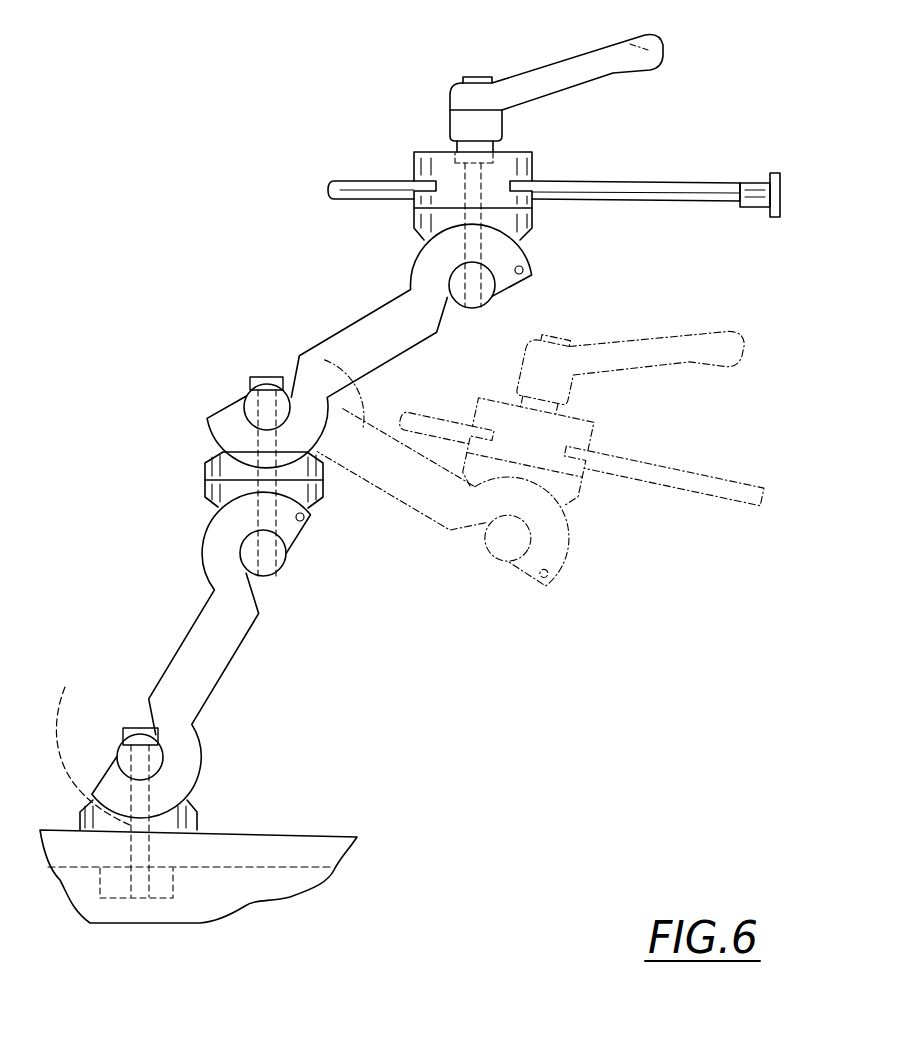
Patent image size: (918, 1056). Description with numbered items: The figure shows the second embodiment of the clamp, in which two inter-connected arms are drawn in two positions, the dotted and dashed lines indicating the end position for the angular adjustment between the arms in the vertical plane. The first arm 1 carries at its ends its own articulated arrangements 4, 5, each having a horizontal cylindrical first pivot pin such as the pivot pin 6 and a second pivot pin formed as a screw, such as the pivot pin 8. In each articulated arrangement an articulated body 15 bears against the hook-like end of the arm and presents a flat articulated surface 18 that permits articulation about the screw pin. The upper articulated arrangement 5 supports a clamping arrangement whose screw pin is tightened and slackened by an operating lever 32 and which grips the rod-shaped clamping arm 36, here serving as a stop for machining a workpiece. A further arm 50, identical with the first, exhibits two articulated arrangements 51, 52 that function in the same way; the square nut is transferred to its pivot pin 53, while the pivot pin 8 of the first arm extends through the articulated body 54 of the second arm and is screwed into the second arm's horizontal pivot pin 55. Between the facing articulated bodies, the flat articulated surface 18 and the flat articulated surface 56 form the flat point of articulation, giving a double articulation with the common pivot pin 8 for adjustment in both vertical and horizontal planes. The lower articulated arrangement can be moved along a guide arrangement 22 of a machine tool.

The arm 1 is at (315, 346).
The articulated arrangement 4 is at (208, 397).
The articulated arrangement 5 is at (554, 171).
The first pivot pin 6 is at (249, 381).
The second pivot pin 8 is at (255, 445).
The articulated body 15 is at (207, 470).
The flat articulated surface 18 is at (215, 502).
The guide arrangement 22 is at (291, 818).
The operating lever 32 is at (660, 45).
The clamping arm 36 is at (718, 187).
The further arm 50 is at (242, 654).
The articulated arrangement 51 is at (92, 727).
The articulated arrangement 52 is at (247, 514).
The pivot pin 53 is at (93, 743).
The articulated body 54 is at (210, 490).
The horizontal pivot pin 55 is at (285, 557).
The flat articulated surface 56 is at (323, 465).